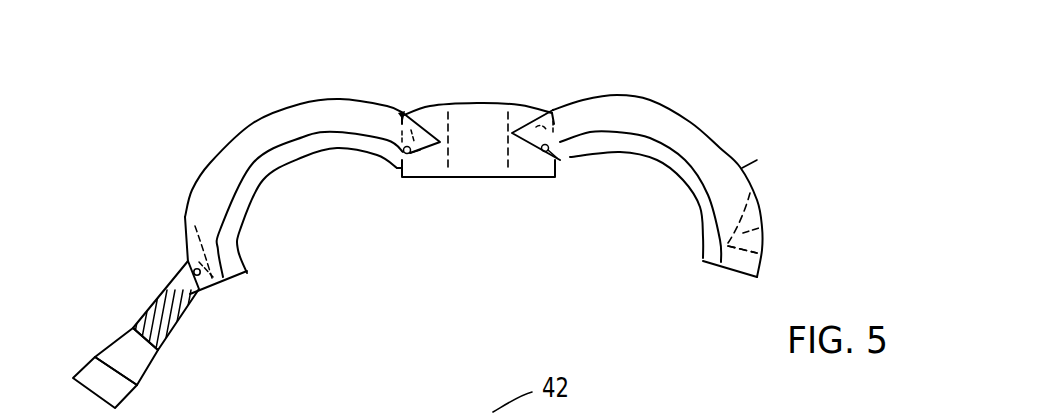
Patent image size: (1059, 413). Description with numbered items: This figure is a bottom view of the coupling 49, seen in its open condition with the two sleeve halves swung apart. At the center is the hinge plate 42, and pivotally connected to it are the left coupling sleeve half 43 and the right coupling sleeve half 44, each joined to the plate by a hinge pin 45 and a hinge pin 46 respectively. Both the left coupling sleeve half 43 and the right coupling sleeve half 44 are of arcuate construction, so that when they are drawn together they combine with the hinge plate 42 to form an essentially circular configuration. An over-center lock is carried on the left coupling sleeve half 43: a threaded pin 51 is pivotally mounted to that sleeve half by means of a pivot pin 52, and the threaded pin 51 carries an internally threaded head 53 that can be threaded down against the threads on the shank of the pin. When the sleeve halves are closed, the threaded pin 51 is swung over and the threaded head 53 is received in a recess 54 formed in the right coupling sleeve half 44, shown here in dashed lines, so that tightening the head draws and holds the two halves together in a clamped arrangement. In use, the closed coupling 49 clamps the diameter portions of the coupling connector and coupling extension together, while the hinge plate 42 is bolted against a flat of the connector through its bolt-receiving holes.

The hinge plate 42 is at (513, 125).
The left coupling sleeve half 43 is at (303, 121).
The right coupling sleeve half 44 is at (682, 134).
The hinge pin 45 is at (418, 150).
The hinge pin 46 is at (556, 142).
The coupling 49 is at (746, 165).
The threaded pin 51 is at (173, 323).
The pivot pin 52 is at (193, 270).
The threaded head 53 is at (128, 365).
The recess 54 is at (762, 227).